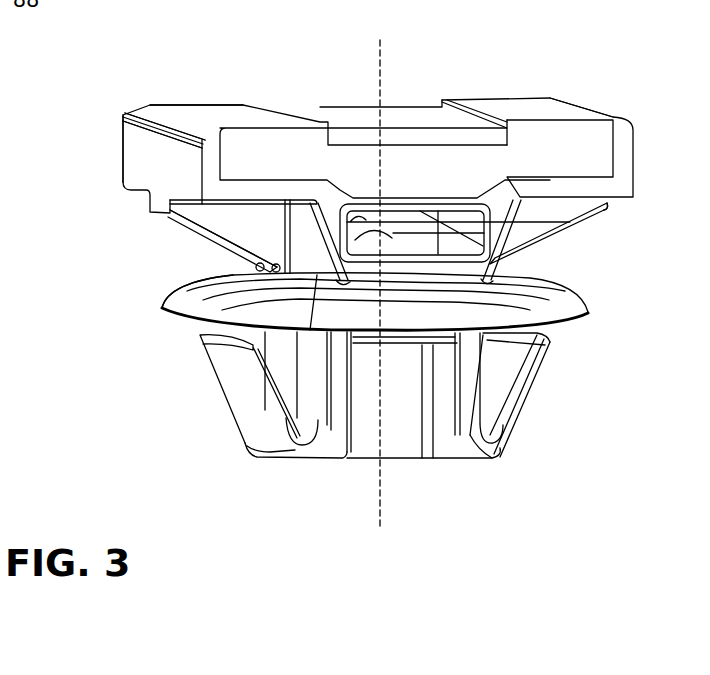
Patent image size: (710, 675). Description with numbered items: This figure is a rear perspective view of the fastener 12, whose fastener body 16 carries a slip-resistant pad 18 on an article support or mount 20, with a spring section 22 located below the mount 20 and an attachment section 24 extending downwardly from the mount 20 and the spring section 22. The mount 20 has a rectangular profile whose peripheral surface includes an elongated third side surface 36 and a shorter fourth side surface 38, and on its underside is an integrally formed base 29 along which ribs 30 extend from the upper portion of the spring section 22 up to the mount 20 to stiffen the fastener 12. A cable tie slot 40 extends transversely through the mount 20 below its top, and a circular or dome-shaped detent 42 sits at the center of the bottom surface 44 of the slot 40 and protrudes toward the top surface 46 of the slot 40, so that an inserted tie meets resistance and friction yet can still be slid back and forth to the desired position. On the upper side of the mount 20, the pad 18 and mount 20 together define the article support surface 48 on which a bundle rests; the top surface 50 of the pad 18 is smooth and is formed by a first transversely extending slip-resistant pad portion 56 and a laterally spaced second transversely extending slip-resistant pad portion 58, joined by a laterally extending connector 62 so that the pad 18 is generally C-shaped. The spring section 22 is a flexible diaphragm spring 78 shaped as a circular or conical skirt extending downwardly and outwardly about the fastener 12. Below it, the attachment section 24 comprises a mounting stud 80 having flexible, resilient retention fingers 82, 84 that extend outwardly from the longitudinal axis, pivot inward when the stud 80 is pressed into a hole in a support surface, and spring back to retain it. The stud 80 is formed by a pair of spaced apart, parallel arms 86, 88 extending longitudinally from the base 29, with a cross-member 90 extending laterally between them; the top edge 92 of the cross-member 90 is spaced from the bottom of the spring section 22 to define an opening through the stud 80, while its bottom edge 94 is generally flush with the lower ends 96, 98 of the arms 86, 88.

The fastener 12 is at (175, 60).
The fastener body 16 is at (648, 126).
The slip-resistant pad 18 is at (512, 92).
The mount 20 is at (84, 95).
The spring section 22 is at (84, 257).
The attachment section 24 is at (84, 323).
The base 29 is at (307, 253).
The ribs 30 is at (222, 222).
The third side surface 36 is at (623, 162).
The fourth side surface 38 is at (143, 150).
The slot 40 is at (222, 262).
The detent 42 is at (507, 242).
The bottom surface of the slot 44 is at (522, 254).
The top surface of the slot 46 is at (570, 222).
The article support surface 48 is at (283, 100).
The top surface of the slip-resistant pad 50 is at (242, 150).
The first transversely extending slip-resistant pad portion 56 is at (563, 147).
The second transversely extending slip-resistant pad portion 58 is at (240, 112).
The connector 62 is at (427, 168).
The diaphragm spring 78 is at (585, 308).
The mounting stud 80 is at (242, 428).
The retention finger 82 is at (539, 418).
The retention finger 84 is at (233, 370).
The arm 86 is at (470, 393).
The arm 88 is at (307, 387).
The cross-member 90 is at (397, 432).
The top edge 92 is at (553, 345).
The bottom edge 94 is at (367, 462).
The lower end 96 is at (490, 463).
The lower end 98 is at (280, 460).